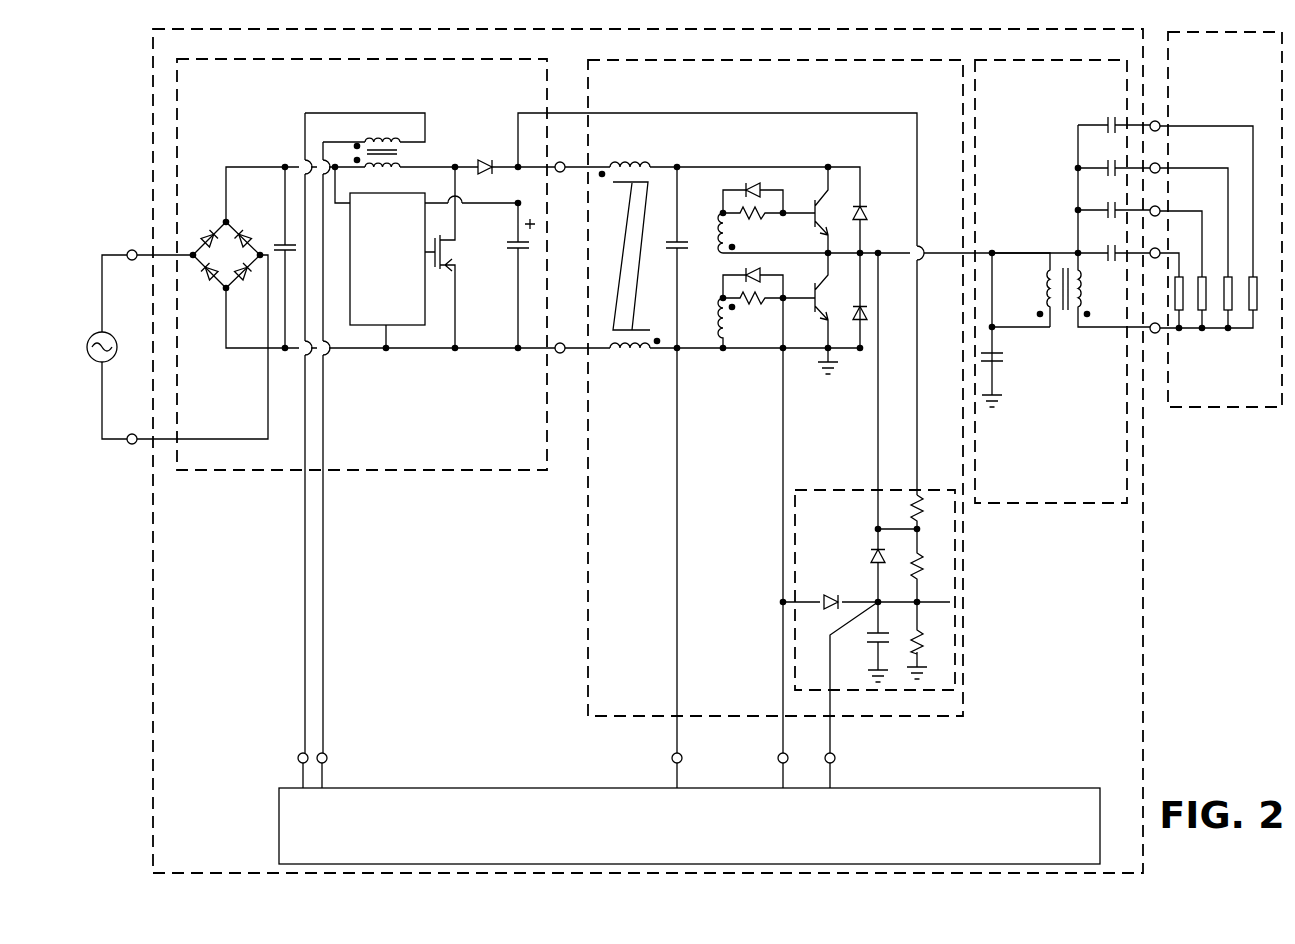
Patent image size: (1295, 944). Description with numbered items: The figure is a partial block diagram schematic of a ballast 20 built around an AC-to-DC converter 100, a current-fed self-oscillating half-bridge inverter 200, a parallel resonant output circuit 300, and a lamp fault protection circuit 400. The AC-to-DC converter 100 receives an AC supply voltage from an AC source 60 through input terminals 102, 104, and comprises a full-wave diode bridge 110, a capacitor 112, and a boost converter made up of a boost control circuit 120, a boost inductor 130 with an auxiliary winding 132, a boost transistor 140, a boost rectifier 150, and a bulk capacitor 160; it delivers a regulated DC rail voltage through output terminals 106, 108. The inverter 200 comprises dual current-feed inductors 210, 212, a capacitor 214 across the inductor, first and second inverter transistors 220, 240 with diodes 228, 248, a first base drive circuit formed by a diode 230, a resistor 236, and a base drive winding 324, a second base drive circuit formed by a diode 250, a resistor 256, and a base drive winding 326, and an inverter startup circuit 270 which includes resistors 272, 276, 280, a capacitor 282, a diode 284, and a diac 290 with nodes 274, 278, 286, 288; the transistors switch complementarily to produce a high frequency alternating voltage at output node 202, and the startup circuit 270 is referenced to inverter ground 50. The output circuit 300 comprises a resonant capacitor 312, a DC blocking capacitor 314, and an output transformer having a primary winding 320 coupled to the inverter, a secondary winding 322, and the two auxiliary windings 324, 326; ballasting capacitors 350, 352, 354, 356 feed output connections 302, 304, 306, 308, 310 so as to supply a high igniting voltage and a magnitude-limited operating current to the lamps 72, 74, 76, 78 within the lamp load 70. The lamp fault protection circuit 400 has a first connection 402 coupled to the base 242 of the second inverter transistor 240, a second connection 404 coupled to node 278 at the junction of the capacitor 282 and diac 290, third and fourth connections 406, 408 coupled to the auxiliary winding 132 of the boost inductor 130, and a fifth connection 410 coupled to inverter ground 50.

The ballast 20 is at (221, 584).
The inverter ground 50 is at (838, 365).
The AC source 60 is at (108, 334).
The lamp load 70 is at (1214, 64).
The lamp 72 is at (1180, 276).
The lamp 74 is at (1205, 276).
The lamp 76 is at (1230, 277).
The lamp 78 is at (1255, 277).
The AC-to-DC converter 100 is at (186, 88).
The input terminal 102 is at (132, 250).
The input terminal 104 is at (133, 444).
The output terminal 106 is at (562, 161).
The output terminal 108 is at (560, 354).
The full-wave diode bridge 110 is at (213, 267).
The capacitor 112 is at (282, 243).
The boost control circuit 120 is at (372, 308).
The boost inductor 130 is at (385, 173).
The auxiliary winding 132 is at (371, 134).
The boost transistor 140 is at (456, 266).
The boost rectifier 150 is at (484, 160).
The bulk capacitor 160 is at (512, 235).
The inverter 200 is at (738, 91).
The inverter output node 202 is at (880, 250).
The current-feed inductor 210 is at (628, 158).
The current-feed inductor 212 is at (625, 356).
The resonant capacitor 214 is at (672, 250).
The first inverter transistor 220 is at (822, 207).
The first clamp diode 228 is at (870, 217).
The diode 230 is at (757, 185).
The resistor 236 is at (760, 218).
The second inverter transistor 240 is at (858, 297).
The base 242 is at (800, 322).
The second clamp diode 248 is at (870, 316).
The diode 250 is at (780, 272).
The resistor 256 is at (760, 305).
The inverter startup circuit 270 is at (798, 512).
The resistor 272 is at (913, 495).
The feedback node 274 is at (920, 529).
The resistor 276 is at (922, 563).
The node 278 is at (950, 602).
The resistor 280 is at (928, 656).
The capacitor 282 is at (868, 638).
The diode 284 is at (870, 560).
The sense connection 286 is at (876, 578).
The sense node 288 is at (874, 536).
The diac 290 is at (840, 596).
The output circuit 300 is at (988, 91).
The output connection 302 is at (1158, 248).
The output connection 304 is at (1158, 206).
The output connection 306 is at (1158, 163).
The output connection 308 is at (1158, 121).
The output connection 310 is at (1158, 334).
The resonant capacitor 312 is at (996, 284).
The DC blocking capacitor 314 is at (1000, 355).
The primary winding 320 is at (1046, 292).
The secondary winding 322 is at (1084, 290).
The base drive winding 324 is at (718, 238).
The base drive winding 326 is at (718, 328).
The ballasting capacitor 350 is at (1105, 250).
The ballasting capacitor 352 is at (1105, 207).
The ballasting capacitor 354 is at (1105, 165).
The ballasting capacitor 356 is at (1105, 122).
The lamp fault protection circuit 400 is at (638, 852).
The first connection 402 is at (778, 761).
The second connection 404 is at (835, 762).
The third connection 406 is at (298, 757).
The fourth connection 408 is at (327, 761).
The fifth connection 410 is at (672, 761).